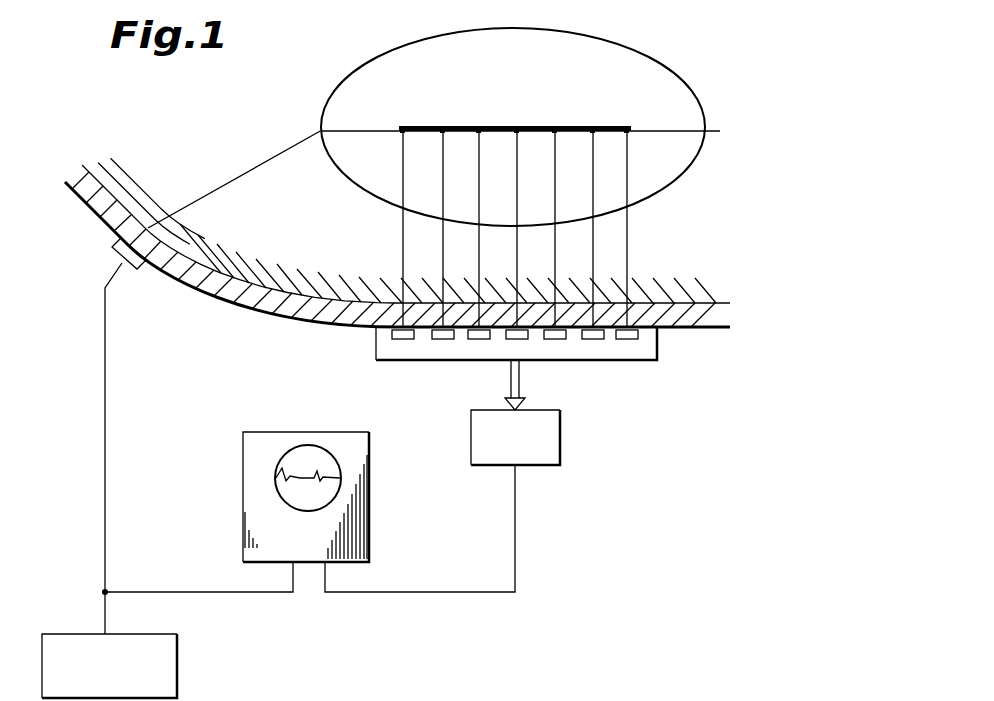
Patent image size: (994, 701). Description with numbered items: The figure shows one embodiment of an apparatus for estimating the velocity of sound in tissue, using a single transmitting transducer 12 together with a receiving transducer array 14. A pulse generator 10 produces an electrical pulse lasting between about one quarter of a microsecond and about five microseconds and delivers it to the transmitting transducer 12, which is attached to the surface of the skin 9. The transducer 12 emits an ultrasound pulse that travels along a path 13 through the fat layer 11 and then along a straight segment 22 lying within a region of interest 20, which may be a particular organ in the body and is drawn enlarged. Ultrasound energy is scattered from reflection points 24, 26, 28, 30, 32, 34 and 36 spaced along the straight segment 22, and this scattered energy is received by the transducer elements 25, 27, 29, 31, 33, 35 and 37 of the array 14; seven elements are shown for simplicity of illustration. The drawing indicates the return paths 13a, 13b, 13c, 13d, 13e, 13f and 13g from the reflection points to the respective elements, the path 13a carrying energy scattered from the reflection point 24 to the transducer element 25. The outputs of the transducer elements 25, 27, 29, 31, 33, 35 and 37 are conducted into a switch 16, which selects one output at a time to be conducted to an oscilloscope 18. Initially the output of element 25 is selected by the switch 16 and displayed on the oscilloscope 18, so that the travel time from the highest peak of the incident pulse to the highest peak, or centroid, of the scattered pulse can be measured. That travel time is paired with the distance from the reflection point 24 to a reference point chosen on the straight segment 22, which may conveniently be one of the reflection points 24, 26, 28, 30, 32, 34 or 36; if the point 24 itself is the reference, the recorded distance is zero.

The skin 9 is at (397, 255).
The pulse generator 10 is at (177, 695).
The fat layer 11 is at (227, 284).
The transmitting transducer 12 is at (112, 255).
The path 13 is at (437, 186).
The path 13a is at (403, 213).
The electrode 13b is at (443, 233).
The electrode 13c is at (479, 248).
The electrode 13d is at (517, 260).
The electrode 13e is at (555, 260).
The electrode 13f is at (593, 245).
The electrode 13g is at (627, 222).
The receiving transducer array 14 is at (535, 372).
The switch 16 is at (560, 462).
The oscilloscope 18 is at (369, 555).
The region of interest 20 is at (650, 60).
The straight segment 22 is at (508, 126).
The reflection point 24 is at (403, 133).
The reflection point 26 is at (443, 133).
The reflection point 28 is at (478, 133).
The reflection point 30 is at (515, 133).
The reflection point 32 is at (553, 133).
The reflection point 34 is at (593, 133).
The reflection point 36 is at (627, 133).
The transducer element 25 is at (402, 340).
The transducer element 27 is at (440, 340).
The transducer element 29 is at (478, 340).
The transducer element 31 is at (515, 340).
The transducer element 33 is at (555, 340).
The transducer element 35 is at (593, 340).
The transducer element 37 is at (628, 340).